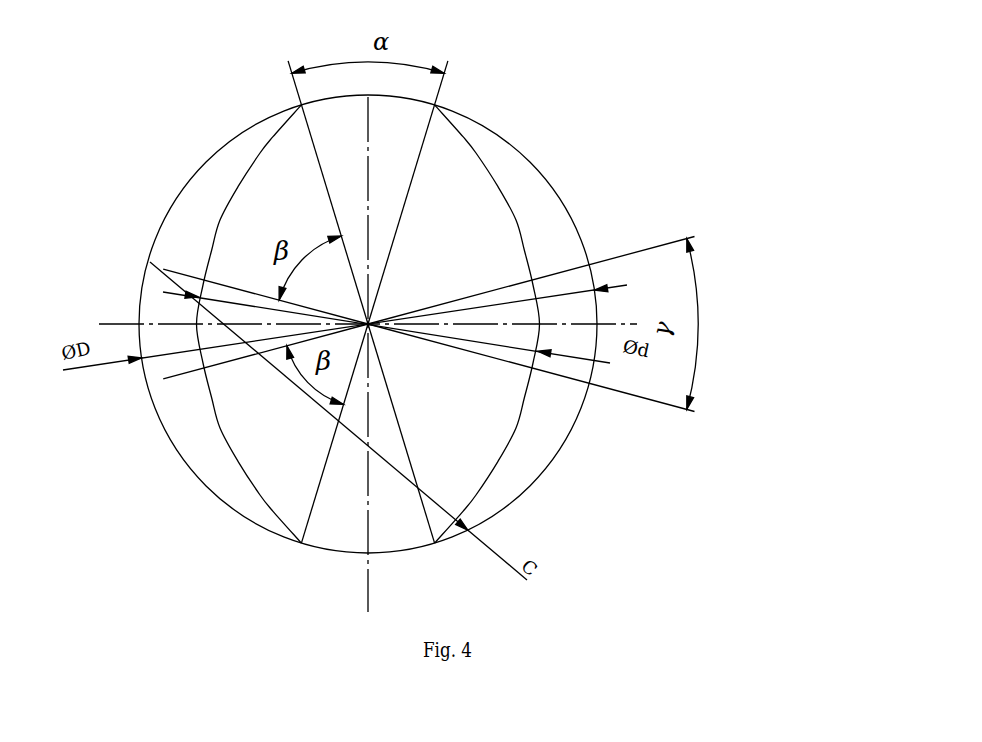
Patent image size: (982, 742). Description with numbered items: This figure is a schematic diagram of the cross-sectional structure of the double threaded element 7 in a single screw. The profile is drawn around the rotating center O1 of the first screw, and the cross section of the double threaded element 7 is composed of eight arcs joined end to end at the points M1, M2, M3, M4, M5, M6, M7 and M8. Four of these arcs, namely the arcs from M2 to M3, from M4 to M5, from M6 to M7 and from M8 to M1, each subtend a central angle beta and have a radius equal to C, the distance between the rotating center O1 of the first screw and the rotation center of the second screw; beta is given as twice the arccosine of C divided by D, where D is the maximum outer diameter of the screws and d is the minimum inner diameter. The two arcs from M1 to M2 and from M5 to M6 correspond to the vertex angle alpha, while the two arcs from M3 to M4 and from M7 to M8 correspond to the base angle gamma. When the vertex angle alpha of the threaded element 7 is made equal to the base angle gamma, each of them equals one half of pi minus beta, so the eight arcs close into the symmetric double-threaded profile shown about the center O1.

The double threaded element 7 is at (485, 207).
The rotating center of the first screw O1 is at (386, 311).
The point M1 is at (316, 192).
The point M2 is at (423, 192).
The point M3 is at (531, 281).
The point M4 is at (531, 368).
The point M5 is at (413, 451).
The point M6 is at (327, 447).
The point M7 is at (265, 357).
The point M8 is at (265, 285).